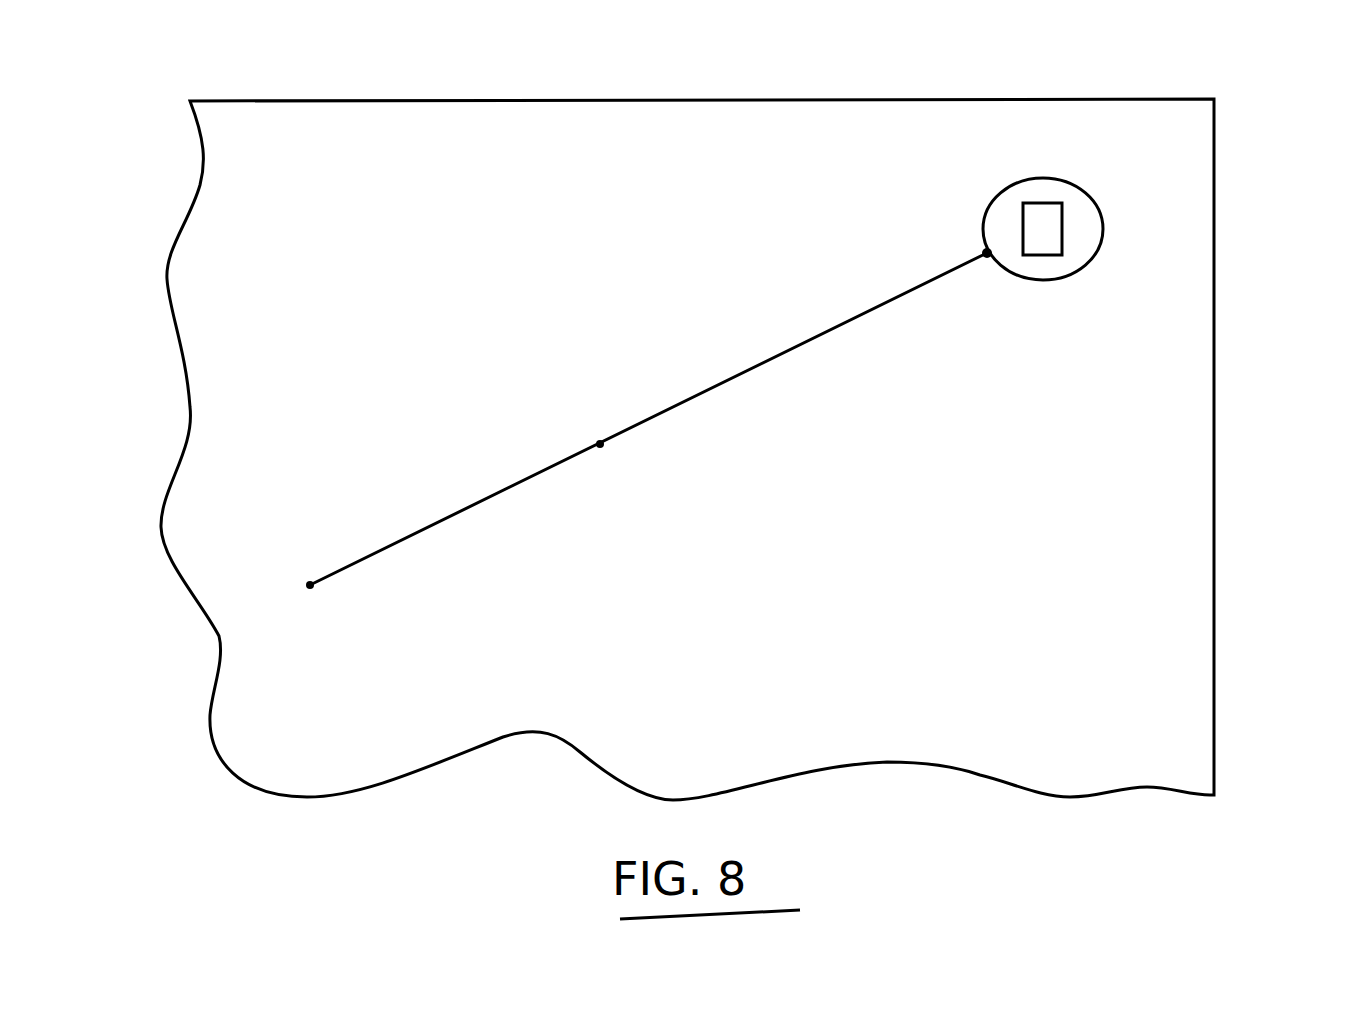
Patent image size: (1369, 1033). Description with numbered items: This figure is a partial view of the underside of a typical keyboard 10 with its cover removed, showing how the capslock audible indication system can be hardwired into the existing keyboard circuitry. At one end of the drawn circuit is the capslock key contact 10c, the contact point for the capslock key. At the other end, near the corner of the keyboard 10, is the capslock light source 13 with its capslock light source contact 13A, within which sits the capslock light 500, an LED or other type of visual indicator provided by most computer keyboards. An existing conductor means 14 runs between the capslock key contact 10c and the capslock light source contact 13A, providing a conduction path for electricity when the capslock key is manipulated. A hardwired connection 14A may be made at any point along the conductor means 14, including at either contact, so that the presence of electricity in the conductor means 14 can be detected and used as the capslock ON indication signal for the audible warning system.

The keyboard 10 is at (1182, 654).
The capslock key contact 10c is at (310, 594).
The capslock light source 13 is at (1107, 222).
The capslock light source contact 13A is at (989, 263).
The conductor means 14 is at (657, 420).
The hardwired connection 14A is at (600, 444).
The capslock light 500 is at (1055, 201).